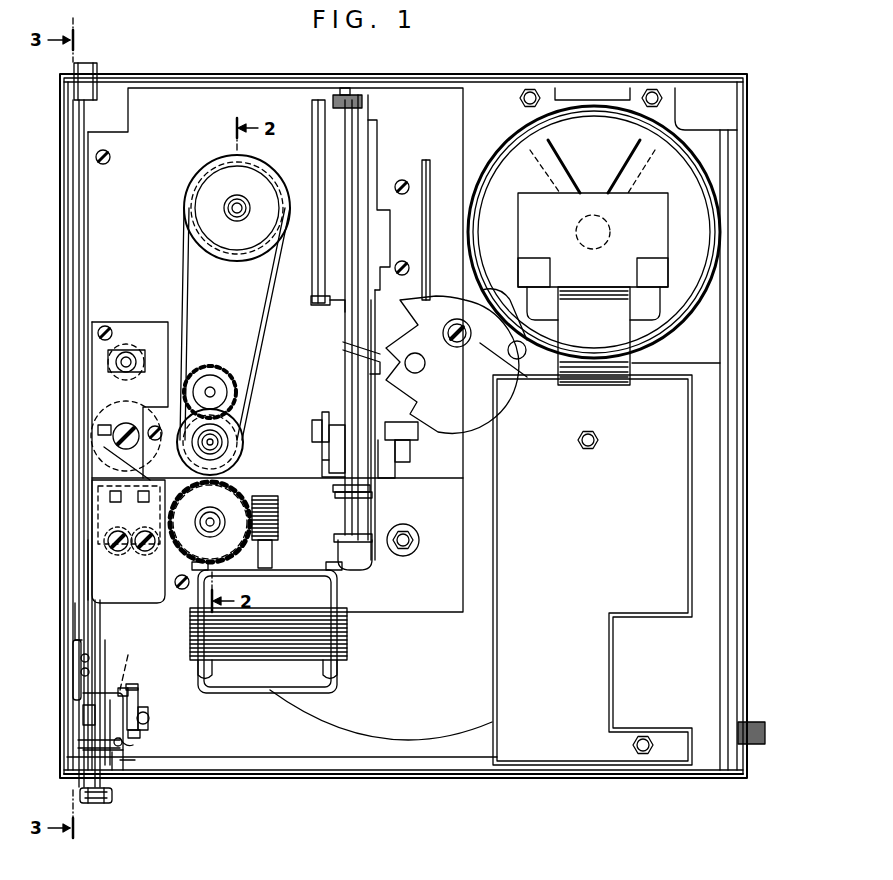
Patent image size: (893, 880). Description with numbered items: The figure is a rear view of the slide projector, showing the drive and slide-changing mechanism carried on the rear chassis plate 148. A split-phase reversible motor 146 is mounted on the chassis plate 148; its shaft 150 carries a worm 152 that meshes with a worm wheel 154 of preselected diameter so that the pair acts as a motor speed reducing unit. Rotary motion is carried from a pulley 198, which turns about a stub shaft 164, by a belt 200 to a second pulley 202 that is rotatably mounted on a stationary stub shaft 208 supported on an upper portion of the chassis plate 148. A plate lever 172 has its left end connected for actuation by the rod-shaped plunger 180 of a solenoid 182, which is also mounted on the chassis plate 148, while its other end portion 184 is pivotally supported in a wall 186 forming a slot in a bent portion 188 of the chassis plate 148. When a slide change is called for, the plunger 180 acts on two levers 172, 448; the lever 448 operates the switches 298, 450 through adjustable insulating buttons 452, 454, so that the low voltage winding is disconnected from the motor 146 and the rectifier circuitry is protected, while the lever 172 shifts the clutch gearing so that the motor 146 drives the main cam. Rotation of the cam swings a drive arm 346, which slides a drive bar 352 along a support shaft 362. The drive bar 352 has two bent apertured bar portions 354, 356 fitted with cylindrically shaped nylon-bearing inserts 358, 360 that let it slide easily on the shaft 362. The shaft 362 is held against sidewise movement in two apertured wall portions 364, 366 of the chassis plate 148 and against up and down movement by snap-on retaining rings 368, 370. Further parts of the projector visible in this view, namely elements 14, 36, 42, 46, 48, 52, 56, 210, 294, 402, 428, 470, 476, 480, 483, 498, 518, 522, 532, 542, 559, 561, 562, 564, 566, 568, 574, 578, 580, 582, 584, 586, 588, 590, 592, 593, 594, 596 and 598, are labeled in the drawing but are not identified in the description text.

The tape recorder apparatus 14 is at (540, 68).
The bottom frame wall 36 is at (368, 778).
The right side wall 42 is at (738, 352).
The side latch block 46 is at (752, 722).
The left side wall 48 is at (66, 212).
The hinge pin 52 is at (86, 63).
The latch rod 56 is at (94, 683).
The motor 146 is at (340, 638).
The rear chassis plate 148 is at (204, 108).
The motor shaft 150 is at (272, 558).
The worm 152 is at (278, 522).
The worm wheel 154 is at (238, 487).
The stub shaft 164 is at (218, 442).
The plate lever 172 is at (100, 380).
The plunger 180 is at (113, 433).
The solenoid 182 is at (104, 408).
The end portion of lever 184 is at (338, 447).
The wall 186 is at (312, 425).
The bent portion 188 is at (328, 412).
The pulley 198 is at (226, 448).
The belt 200 is at (186, 258).
The second pulley 202 is at (203, 178).
The stationary stub shaft 208 is at (234, 208).
The flywheel rim 210 is at (226, 157).
The guide bracket 294 is at (130, 350).
The switch 298 is at (105, 520).
The drive arm 346 is at (396, 404).
The drive bar 352 is at (346, 356).
The bent apertured bar portion 354 is at (338, 310).
The bent apertured bar portion 356 is at (336, 489).
The nylon-bearing insert 358 is at (340, 498).
The nylon-bearing insert 360 is at (318, 296).
The support shaft 362 is at (352, 140).
The apertured wall portion 364 is at (366, 105).
The apertured wall portion 366 is at (382, 530).
The snap-on retaining ring 368 is at (346, 95).
The snap-on retaining ring 370 is at (365, 548).
The guide post 402 is at (430, 182).
The actuating bar 428 is at (377, 507).
The lever 448 is at (110, 577).
The switch 450 is at (98, 500).
The adjustable insulating button 452 is at (106, 538).
The adjustable insulating button 454 is at (132, 548).
The guide plate 470 is at (316, 150).
The support plate 476 is at (388, 458).
The stop block 480 is at (412, 444).
The stop pad 483 is at (418, 426).
The pivot pin 498 is at (116, 360).
The lever 518 is at (463, 355).
The pivot screw 522 is at (452, 318).
The link arm 532 is at (343, 344).
The knurled knob 542 is at (98, 803).
The wire 559 is at (105, 760).
The clip 561 is at (83, 710).
The spring bracket 562 is at (78, 640).
The rod 564 is at (84, 561).
The spring 566 is at (80, 660).
The bracket arm 568 is at (74, 612).
The U-bracket 574 is at (106, 723).
The spring end 578 is at (133, 745).
The pin 580 is at (140, 760).
The roller 582 is at (148, 715).
The lug 584 is at (128, 757).
The tab 586 is at (128, 690).
The washer 588 is at (140, 733).
The lever arm 590 is at (124, 688).
The plate 592 is at (138, 698).
The pin 593 is at (120, 765).
The clip 594 is at (115, 732).
The post 596 is at (118, 765).
The tab 598 is at (138, 688).